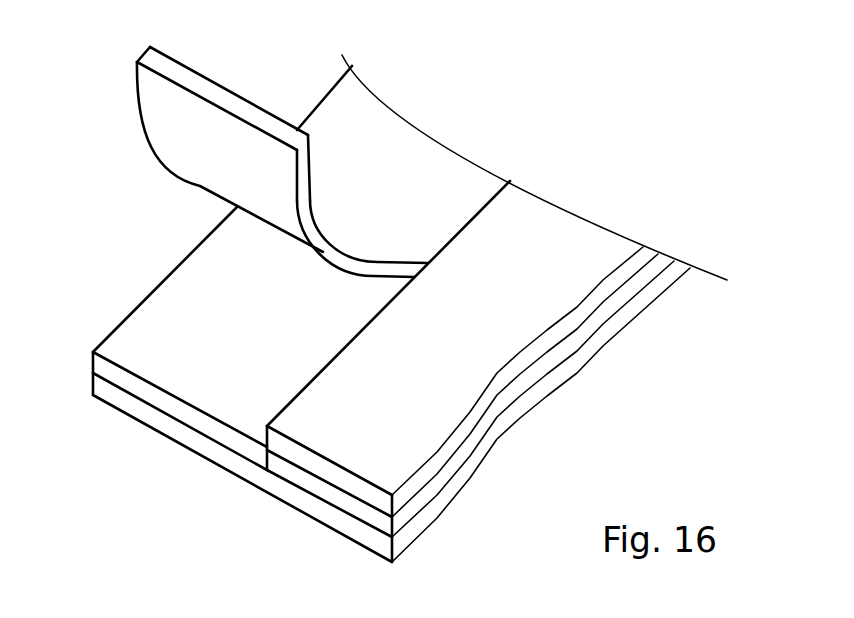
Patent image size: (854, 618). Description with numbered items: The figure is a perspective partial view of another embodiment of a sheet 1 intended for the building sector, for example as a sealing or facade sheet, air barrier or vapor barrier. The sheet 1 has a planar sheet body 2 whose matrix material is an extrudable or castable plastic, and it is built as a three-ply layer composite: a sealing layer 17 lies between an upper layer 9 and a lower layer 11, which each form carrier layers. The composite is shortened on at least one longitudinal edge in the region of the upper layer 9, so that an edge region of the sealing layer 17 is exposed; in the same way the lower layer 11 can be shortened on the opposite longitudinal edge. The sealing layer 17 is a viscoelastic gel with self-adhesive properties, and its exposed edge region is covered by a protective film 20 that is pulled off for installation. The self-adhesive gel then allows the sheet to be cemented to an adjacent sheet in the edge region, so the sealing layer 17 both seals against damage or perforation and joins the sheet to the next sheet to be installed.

The sheet 1 is at (605, 112).
The sheet body 2 is at (315, 92).
The upper layer 9 is at (560, 236).
The lower layer 11 is at (417, 527).
The sealing layer 17 is at (330, 495).
The covering protective film 20 is at (155, 112).